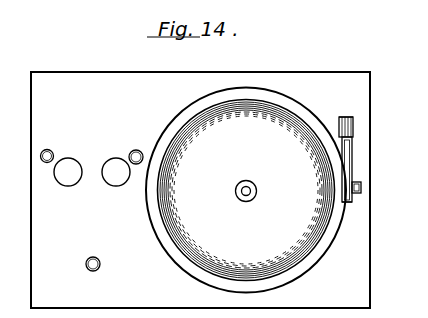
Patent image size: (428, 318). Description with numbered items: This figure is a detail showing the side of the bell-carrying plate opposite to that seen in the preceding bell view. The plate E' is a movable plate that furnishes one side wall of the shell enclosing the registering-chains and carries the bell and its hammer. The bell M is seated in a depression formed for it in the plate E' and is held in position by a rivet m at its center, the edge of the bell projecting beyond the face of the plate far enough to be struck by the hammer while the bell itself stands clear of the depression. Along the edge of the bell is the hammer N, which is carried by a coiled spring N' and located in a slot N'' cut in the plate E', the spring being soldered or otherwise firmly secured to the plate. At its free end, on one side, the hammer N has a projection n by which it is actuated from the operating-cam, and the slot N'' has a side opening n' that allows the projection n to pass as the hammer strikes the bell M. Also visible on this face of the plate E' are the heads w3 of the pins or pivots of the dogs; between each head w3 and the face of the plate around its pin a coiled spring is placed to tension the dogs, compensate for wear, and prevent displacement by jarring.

The plate E' is at (200, 190).
The head w3 is at (68, 183).
The bell M is at (246, 190).
The rivet m is at (236, 191).
The coiled spring N' is at (340, 104).
The slot N'' is at (366, 122).
The hammer N is at (368, 169).
The side opening n' is at (374, 191).
The projection n is at (350, 226).